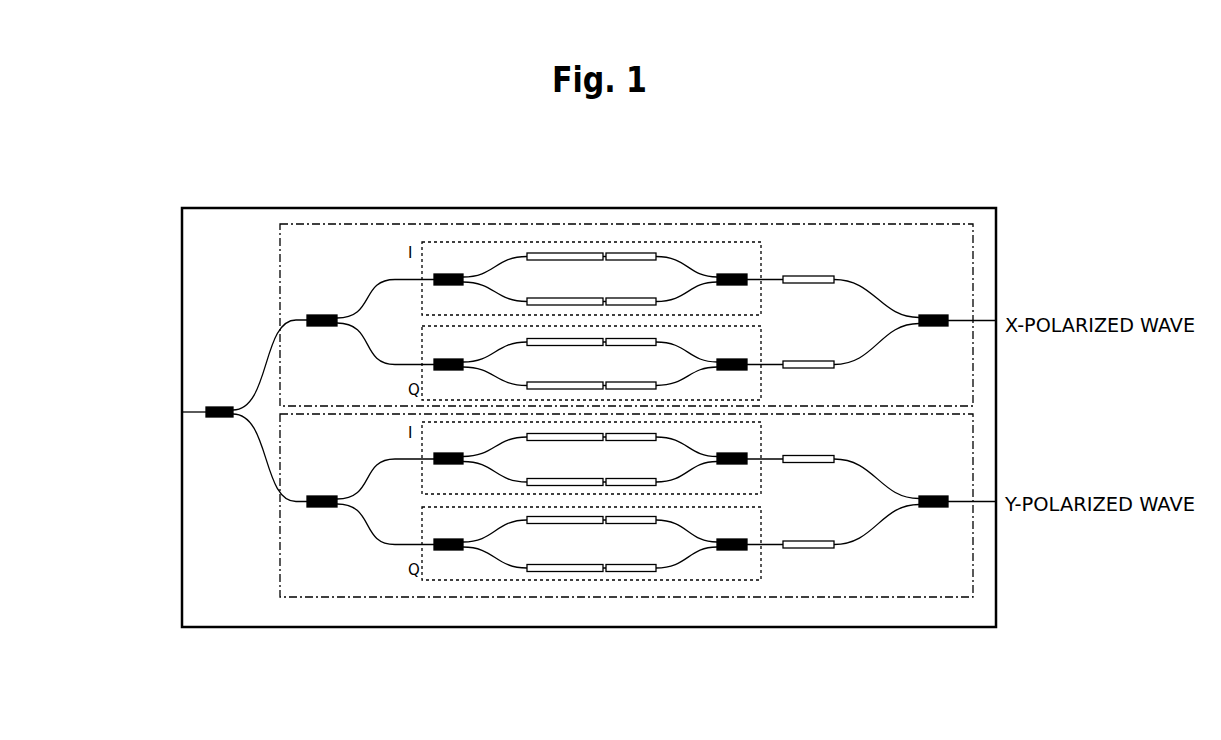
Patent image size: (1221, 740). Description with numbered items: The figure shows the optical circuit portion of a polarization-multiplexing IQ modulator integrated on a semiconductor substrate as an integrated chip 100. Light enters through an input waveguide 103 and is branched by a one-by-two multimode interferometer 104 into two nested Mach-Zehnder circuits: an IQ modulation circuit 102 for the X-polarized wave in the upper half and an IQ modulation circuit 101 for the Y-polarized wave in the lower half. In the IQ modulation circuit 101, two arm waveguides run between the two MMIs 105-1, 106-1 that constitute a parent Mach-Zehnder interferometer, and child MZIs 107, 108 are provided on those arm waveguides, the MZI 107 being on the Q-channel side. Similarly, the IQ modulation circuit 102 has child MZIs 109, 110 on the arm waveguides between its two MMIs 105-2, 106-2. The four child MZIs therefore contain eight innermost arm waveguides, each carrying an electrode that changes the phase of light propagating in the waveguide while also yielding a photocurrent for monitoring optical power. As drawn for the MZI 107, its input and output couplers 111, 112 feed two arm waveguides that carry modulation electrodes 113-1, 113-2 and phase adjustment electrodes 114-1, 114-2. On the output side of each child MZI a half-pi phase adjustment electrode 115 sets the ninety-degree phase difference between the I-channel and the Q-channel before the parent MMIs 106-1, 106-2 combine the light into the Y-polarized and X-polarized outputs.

The integrated chip 100 is at (592, 185).
The IQ modulation circuit for Y-polarized wave 101 is at (973, 437).
The IQ modulation circuit for X-polarized wave 102 is at (973, 267).
The input waveguide 103 is at (200, 412).
The 1×2 multimode interferometer (MMI) 104 is at (220, 418).
The MMI 105-1 is at (320, 496).
The MMI 105-2 is at (320, 315).
The MMI 106-1 is at (937, 496).
The MMI 106-2 is at (937, 315).
The child MZI 107 is at (609, 545).
The child MZI 108 is at (762, 427).
The child MZI 109 is at (762, 328).
The child MZI 110 is at (762, 243).
The input optical coupler 111 is at (445, 539).
The output optical coupler 112 is at (735, 551).
The modulation electrode 113-1 is at (528, 570).
The modulation electrode 113-2 is at (528, 517).
The phase adjustment electrode 114-1 is at (655, 570).
The phase adjustment electrode 114-2 is at (655, 517).
The π/2 phase adjustment electrode 115 is at (815, 548).